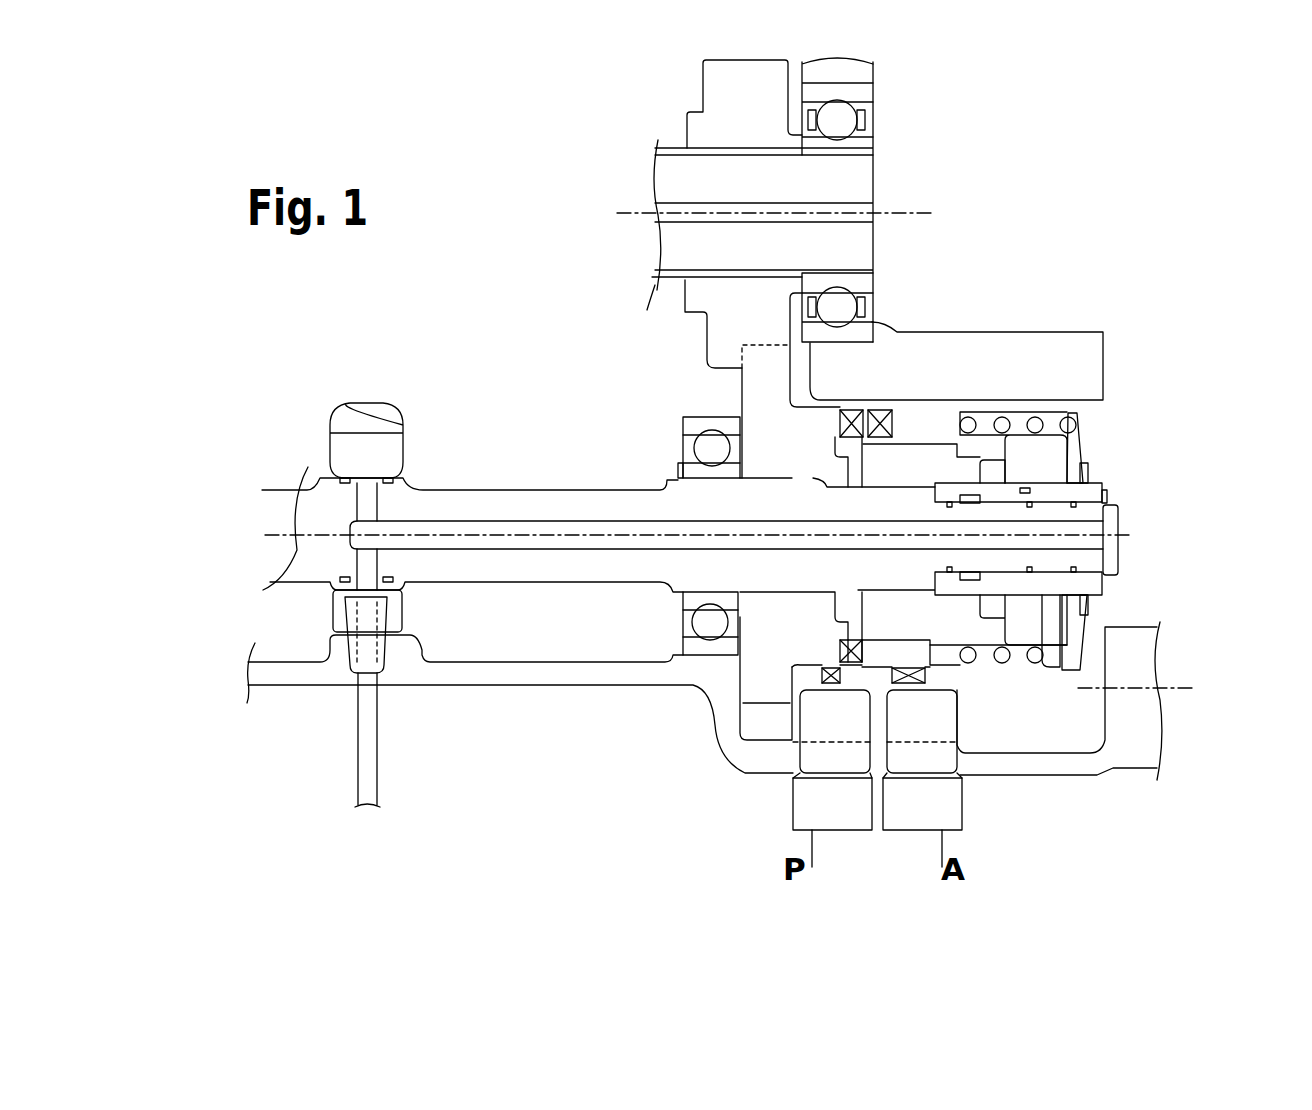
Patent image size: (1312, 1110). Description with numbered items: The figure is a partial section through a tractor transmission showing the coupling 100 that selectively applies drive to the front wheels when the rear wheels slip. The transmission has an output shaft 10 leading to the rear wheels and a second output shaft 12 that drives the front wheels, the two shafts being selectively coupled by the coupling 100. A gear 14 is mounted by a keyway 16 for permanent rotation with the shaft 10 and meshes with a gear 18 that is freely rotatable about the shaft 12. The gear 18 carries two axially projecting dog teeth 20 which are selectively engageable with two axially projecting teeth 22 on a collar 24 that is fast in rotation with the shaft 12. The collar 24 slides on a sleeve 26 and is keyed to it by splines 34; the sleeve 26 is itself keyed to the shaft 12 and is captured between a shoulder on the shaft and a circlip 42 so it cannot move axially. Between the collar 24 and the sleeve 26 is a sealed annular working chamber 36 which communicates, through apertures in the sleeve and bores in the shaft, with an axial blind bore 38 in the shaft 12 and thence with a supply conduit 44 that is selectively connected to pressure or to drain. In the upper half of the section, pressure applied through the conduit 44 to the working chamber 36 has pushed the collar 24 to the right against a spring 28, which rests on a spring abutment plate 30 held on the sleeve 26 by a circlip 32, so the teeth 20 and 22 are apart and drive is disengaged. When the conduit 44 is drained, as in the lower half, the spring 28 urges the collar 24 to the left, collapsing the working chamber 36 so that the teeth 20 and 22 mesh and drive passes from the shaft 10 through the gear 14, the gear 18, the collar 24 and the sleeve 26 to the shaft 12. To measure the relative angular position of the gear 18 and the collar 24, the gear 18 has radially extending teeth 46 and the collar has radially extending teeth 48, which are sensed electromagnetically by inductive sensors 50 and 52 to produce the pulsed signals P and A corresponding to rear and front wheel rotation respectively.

The output shaft 10 is at (866, 237).
The coupling 100 is at (1116, 262).
The keyway 16 is at (657, 287).
The gear 14 is at (723, 313).
The dog teeth 20 is at (853, 407).
The teeth 22 is at (887, 407).
The working chamber 36 is at (987, 467).
The collar 24 is at (1047, 450).
The spring abutment plate 30 is at (1080, 418).
The circlip 32 is at (1087, 467).
The circlip 42 is at (1110, 500).
The axial blind bore 38 is at (492, 528).
The second output shaft 12 is at (300, 560).
The splines 34 is at (880, 623).
The sleeve 26 is at (1003, 597).
The spring 28 is at (977, 657).
The gear 18 is at (750, 673).
The supply conduit 44 is at (370, 718).
The teeth 46 is at (827, 668).
The teeth 48 is at (923, 690).
The inductive sensor 50 is at (807, 813).
The inductive sensor 52 is at (950, 812).